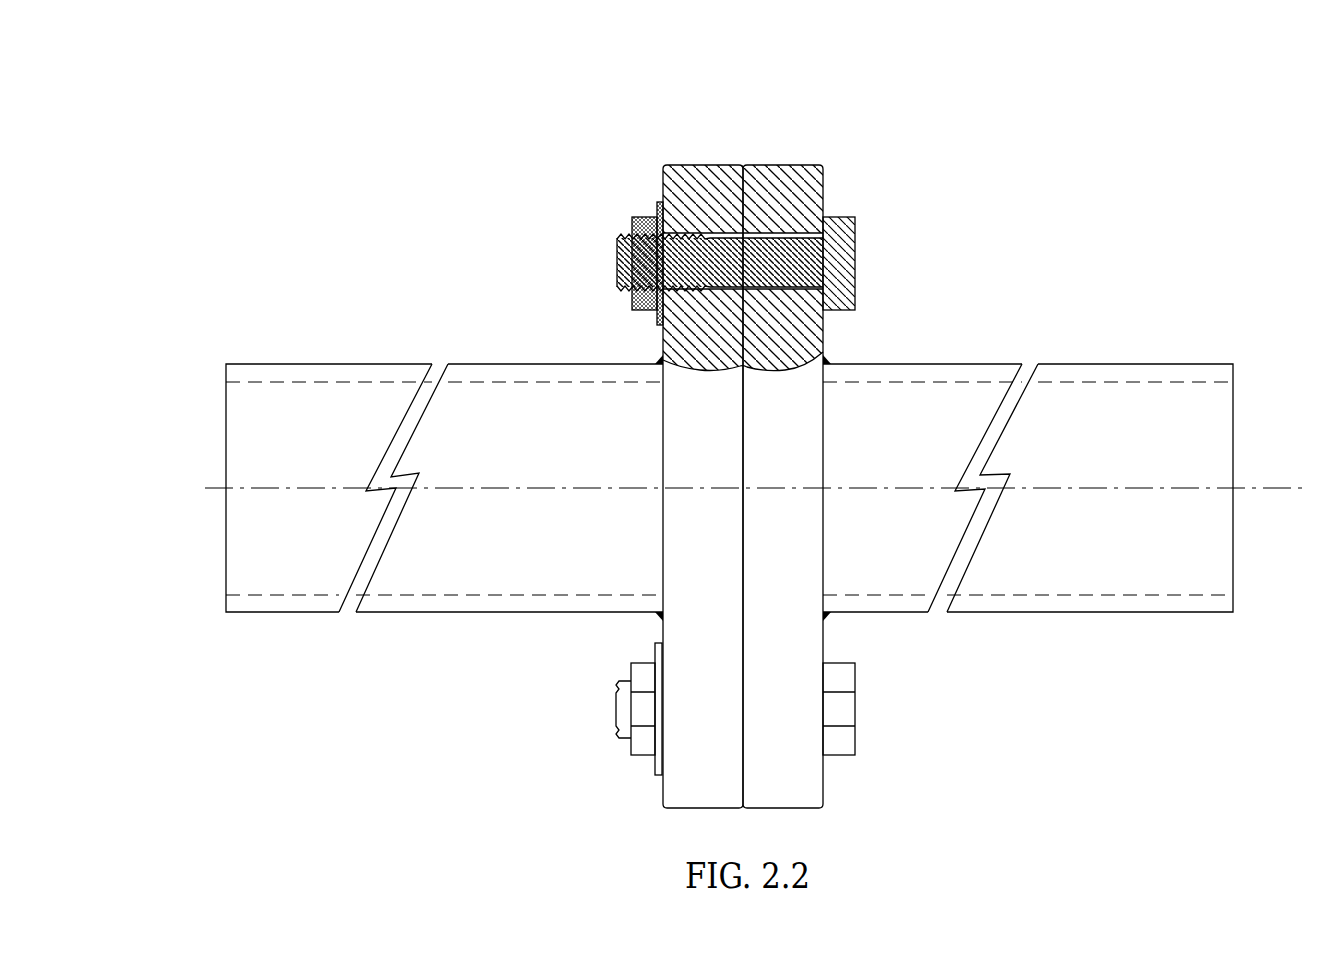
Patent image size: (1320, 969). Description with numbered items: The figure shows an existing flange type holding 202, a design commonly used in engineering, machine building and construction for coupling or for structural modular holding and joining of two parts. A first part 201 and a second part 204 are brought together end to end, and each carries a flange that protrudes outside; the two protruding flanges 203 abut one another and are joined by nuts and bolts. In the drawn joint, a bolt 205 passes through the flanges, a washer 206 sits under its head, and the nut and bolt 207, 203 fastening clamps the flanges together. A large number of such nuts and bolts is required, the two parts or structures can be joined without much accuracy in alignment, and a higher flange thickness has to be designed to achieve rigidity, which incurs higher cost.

The first pipe section 201 is at (563, 415).
The flanged pipe joint assembly 202 is at (359, 147).
The bolt 203 is at (821, 625).
The second pipe section 204 is at (930, 410).
The bolt and nut fastener 205 is at (605, 256).
The washer 206 is at (633, 211).
The nut 207 is at (651, 189).